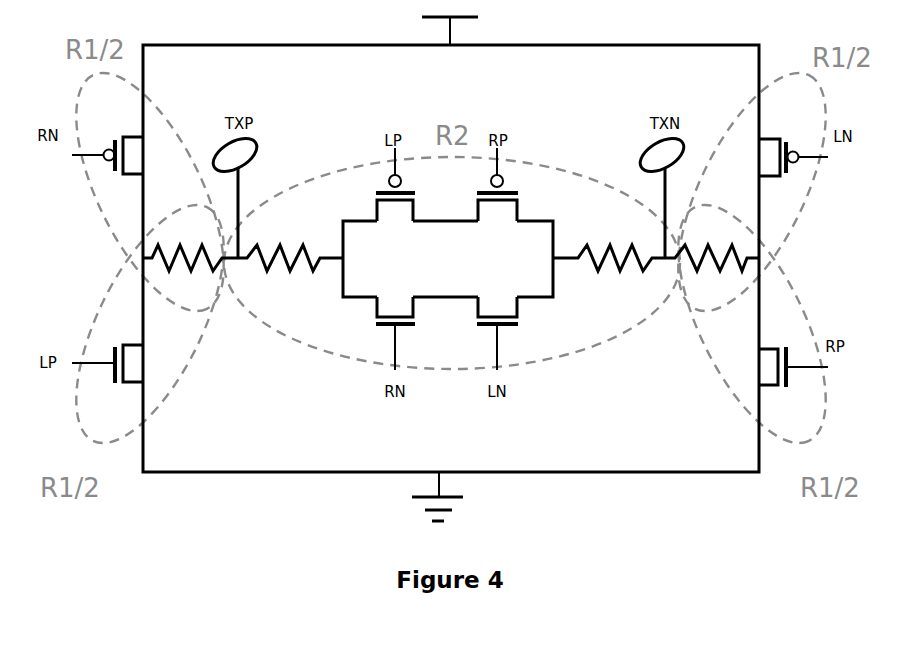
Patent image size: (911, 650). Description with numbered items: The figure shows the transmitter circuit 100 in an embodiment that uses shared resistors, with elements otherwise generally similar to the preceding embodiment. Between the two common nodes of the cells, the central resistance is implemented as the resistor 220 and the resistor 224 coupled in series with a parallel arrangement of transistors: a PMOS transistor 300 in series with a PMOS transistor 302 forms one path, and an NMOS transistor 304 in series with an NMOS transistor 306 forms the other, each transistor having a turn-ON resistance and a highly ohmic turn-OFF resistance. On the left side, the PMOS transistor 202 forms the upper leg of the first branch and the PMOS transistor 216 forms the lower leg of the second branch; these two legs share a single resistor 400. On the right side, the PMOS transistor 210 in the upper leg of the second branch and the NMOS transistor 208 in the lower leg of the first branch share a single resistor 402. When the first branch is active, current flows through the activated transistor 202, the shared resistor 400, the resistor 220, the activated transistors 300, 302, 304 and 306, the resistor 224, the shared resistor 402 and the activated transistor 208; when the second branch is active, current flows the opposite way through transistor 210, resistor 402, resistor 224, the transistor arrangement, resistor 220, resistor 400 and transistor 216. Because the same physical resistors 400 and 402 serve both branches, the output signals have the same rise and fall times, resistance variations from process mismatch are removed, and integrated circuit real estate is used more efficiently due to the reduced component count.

The transmitter circuit 100 is at (180, 527).
The PMOS transistor 202 is at (127, 155).
The NMOS transistor 208 is at (772, 367).
The PMOS transistor 210 is at (771, 157).
The PMOS transistor 216 is at (131, 364).
The resistor 220 is at (290, 242).
The resistor 224 is at (609, 274).
The PMOS transistor 300 is at (395, 200).
The PMOS transistor 302 is at (497, 198).
The NMOS transistor 304 is at (394, 318).
The NMOS transistor 306 is at (497, 318).
The resistor 400 is at (190, 272).
The resistor 402 is at (712, 242).